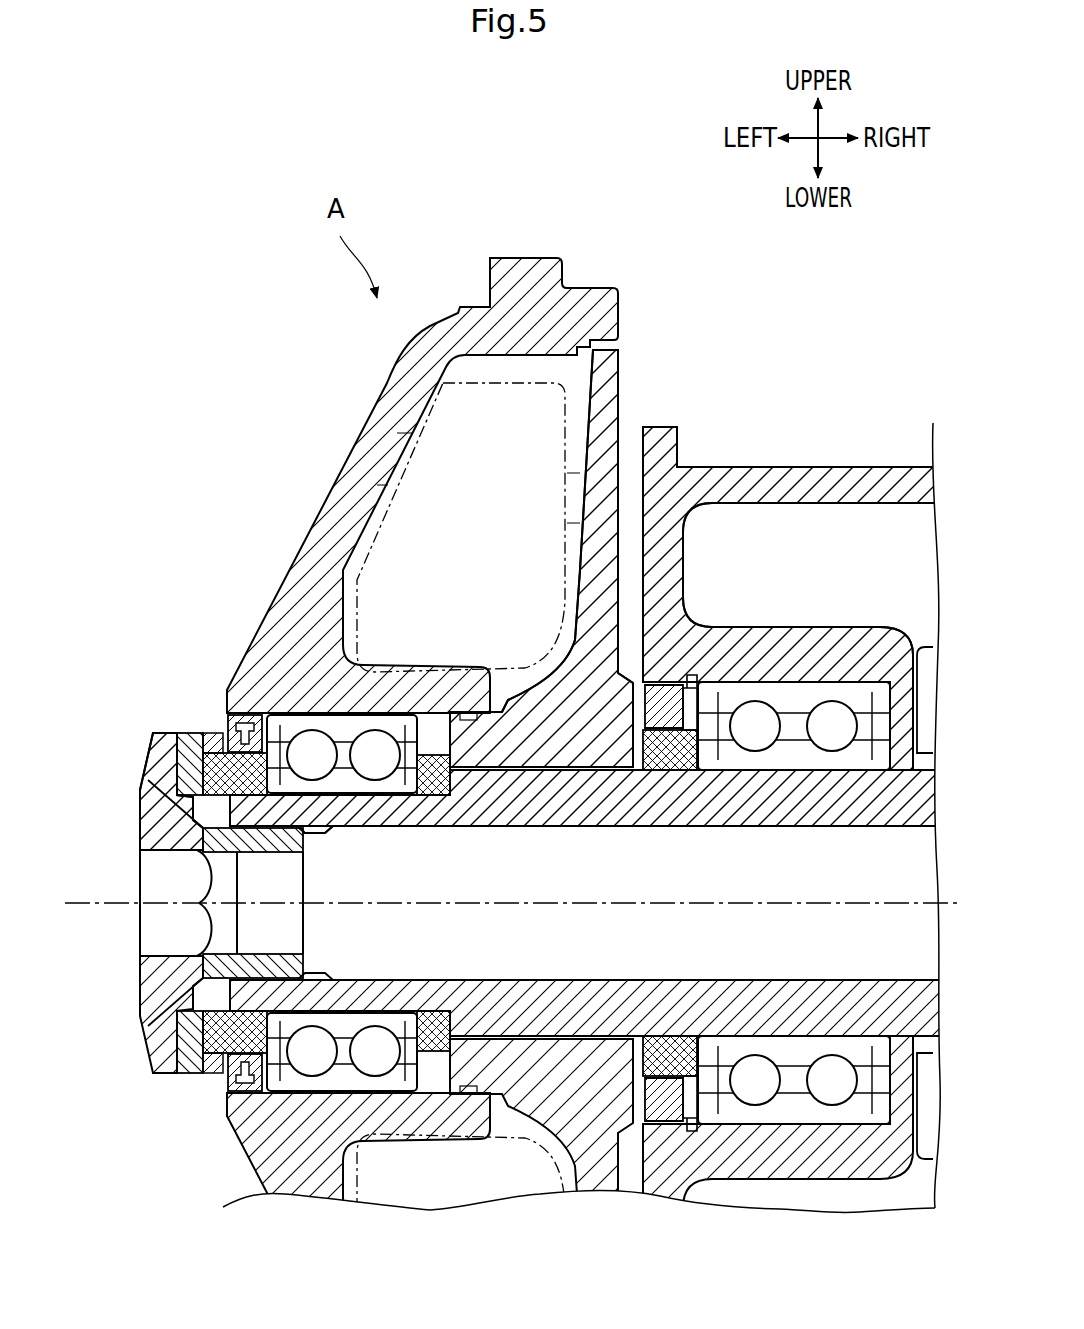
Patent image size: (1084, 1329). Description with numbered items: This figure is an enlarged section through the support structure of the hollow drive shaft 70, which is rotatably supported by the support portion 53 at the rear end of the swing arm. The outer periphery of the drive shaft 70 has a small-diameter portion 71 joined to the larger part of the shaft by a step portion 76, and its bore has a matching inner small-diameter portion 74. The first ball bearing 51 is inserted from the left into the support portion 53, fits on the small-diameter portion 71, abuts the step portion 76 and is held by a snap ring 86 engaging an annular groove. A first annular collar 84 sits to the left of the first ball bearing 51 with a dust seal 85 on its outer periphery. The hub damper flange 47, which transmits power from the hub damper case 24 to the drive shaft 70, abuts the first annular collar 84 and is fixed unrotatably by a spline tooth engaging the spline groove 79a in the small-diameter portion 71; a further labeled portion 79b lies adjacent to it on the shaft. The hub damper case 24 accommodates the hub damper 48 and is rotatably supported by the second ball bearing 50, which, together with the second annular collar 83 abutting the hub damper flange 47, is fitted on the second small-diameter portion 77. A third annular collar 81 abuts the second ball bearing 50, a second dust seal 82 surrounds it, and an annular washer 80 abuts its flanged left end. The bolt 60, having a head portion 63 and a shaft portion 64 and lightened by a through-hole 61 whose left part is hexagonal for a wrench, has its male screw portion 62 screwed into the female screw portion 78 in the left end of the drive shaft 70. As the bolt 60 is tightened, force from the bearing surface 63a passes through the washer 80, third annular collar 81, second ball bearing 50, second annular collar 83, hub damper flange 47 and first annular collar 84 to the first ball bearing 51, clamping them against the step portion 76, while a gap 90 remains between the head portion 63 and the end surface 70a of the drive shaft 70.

The hub damper case 24 is at (393, 395).
The hub damper flange 47 is at (607, 380).
The hub damper 48 is at (387, 453).
The second ball bearing 50 is at (245, 733).
The first ball bearing 51 is at (755, 686).
The support portion 53 is at (722, 483).
The bolt 60 is at (137, 820).
The through-hole 61 is at (170, 860).
The male screw portion 62 is at (252, 818).
The head portion 63 is at (157, 750).
The bearing surface 63a is at (184, 1045).
The shaft portion 64 is at (278, 946).
The drive shaft 70 is at (743, 808).
The end surface 70a is at (226, 997).
The small-diameter portion 71 is at (792, 764).
The inner small-diameter portion 74 is at (693, 977).
The step portion 76 is at (883, 762).
The second small-diameter portion 77 is at (341, 789).
The female screw portion 78 is at (313, 834).
The spline groove 79a is at (510, 766).
The fitting portion of shaft 79b is at (573, 777).
The annular washer 80 is at (180, 737).
The third annular collar 81 is at (207, 735).
The second dust seal 82 is at (240, 738).
The second annular collar 83 is at (434, 792).
The first annular collar 84 is at (664, 760).
The dust seal 85 is at (656, 700).
The snap ring 86 is at (688, 690).
The gap 90 is at (206, 807).